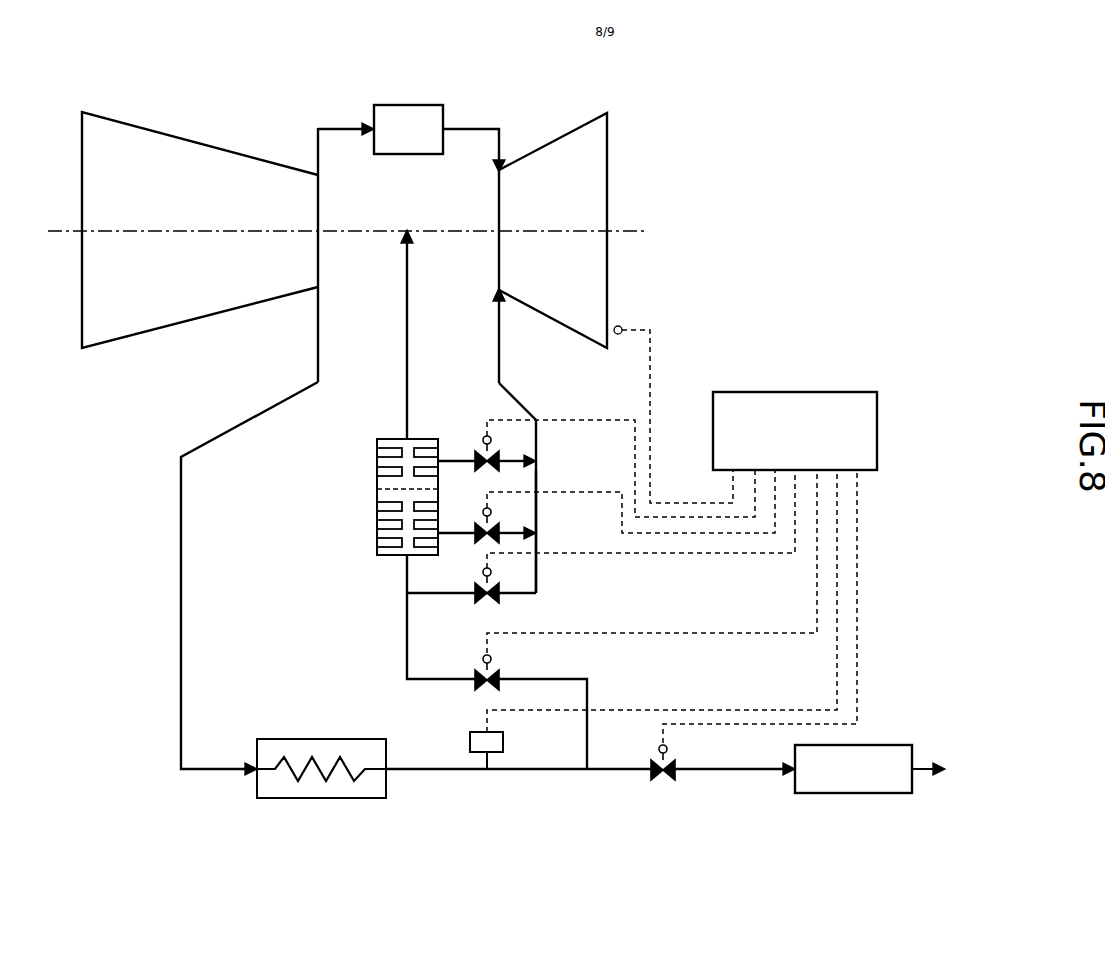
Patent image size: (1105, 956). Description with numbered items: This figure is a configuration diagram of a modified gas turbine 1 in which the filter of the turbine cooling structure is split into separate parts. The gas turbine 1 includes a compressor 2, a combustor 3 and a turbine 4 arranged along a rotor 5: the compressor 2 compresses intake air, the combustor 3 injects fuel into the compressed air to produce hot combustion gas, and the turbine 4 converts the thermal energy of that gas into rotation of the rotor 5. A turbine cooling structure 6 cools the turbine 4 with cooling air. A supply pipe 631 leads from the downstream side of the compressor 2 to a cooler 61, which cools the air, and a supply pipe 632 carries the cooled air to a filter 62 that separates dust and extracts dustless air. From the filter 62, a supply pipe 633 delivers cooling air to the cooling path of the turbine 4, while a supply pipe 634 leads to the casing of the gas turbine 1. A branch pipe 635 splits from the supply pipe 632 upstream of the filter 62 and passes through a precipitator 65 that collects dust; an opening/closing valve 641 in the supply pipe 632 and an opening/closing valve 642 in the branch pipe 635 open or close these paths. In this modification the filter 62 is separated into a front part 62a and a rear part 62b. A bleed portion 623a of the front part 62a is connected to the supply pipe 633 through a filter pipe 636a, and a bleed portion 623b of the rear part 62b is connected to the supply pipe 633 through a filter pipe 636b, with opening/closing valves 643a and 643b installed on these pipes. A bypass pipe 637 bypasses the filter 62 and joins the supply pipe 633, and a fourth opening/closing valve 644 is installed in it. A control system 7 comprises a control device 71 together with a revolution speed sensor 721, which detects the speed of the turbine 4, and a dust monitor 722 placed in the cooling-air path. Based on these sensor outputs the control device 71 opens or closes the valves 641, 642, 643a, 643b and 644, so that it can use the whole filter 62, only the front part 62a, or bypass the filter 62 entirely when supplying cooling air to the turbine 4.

The gas turbine 1 is at (841, 149).
The compressor 2 is at (166, 133).
The combustor 3 is at (419, 105).
The turbine 4 is at (565, 134).
The rotor 5 is at (634, 225).
The turbine cooling structure 6 is at (172, 786).
The control system 7 is at (860, 330).
The cooler 61 is at (345, 736).
The filter 62 is at (372, 434).
The front part 62a is at (374, 518).
The rear part 62b is at (374, 462).
The precipitator 65 is at (889, 744).
The control device 71 is at (836, 392).
The supply pipe 631 is at (232, 425).
The supply pipe 632 is at (400, 645).
The supply pipe 633 is at (500, 355).
The supply pipe 634 is at (410, 355).
The branch pipe 635 is at (615, 773).
The filter pipe 636a is at (535, 532).
The filter pipe 636b is at (535, 463).
The bypass pipe 637 is at (540, 584).
The bleed portion 623a is at (440, 530).
The bleed portion 623b is at (442, 464).
The opening/closing valve 641 is at (500, 674).
The opening/closing valve 642 is at (664, 781).
The opening/closing valve 643a is at (482, 558).
The opening/closing valve 643b is at (481, 445).
The fourth opening/closing valve 644 is at (475, 600).
The revolution speed sensor 721 is at (624, 325).
The dust monitor 722 is at (503, 741).